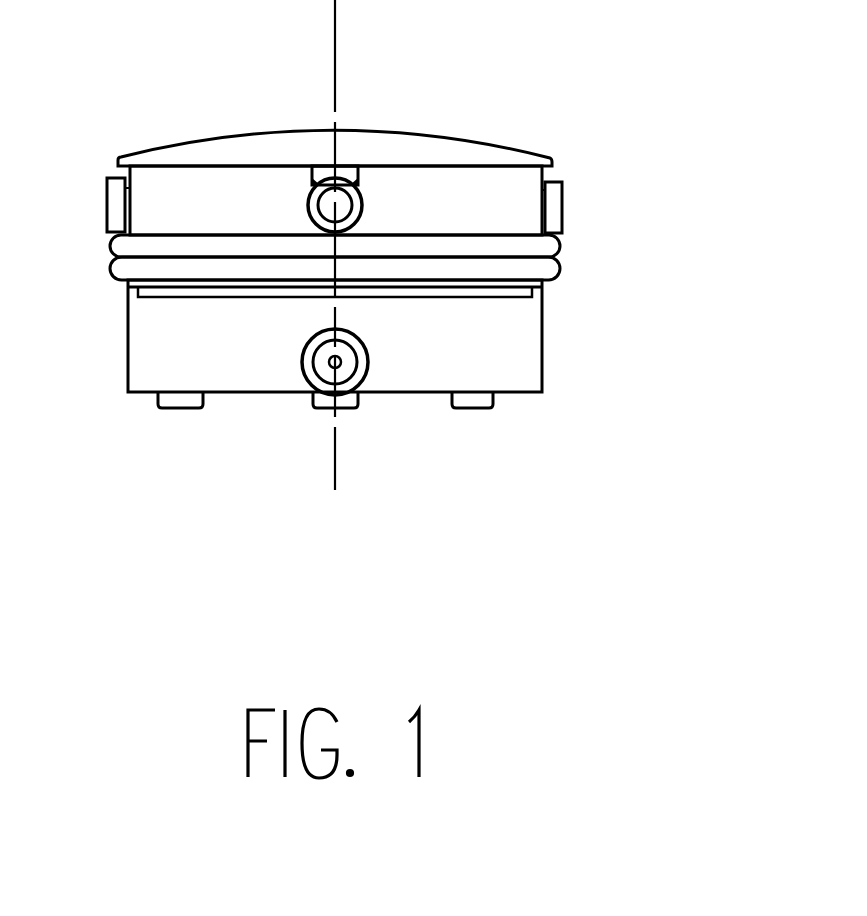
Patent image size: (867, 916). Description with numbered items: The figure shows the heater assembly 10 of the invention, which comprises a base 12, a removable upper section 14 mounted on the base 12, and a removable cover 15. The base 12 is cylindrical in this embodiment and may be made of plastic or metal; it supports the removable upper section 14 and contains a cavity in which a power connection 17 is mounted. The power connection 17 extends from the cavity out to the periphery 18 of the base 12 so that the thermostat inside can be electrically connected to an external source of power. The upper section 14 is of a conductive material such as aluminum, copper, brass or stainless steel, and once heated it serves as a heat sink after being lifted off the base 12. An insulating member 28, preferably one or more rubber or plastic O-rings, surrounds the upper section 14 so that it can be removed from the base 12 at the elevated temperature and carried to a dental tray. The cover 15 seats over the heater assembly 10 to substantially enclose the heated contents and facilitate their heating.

The heater assembly 10 is at (395, 286).
The base 12 is at (445, 369).
The removable upper section 14 is at (292, 125).
The removable cover 15 is at (490, 145).
The power connection 17 is at (442, 451).
The periphery 18 is at (258, 481).
The insulating member 28 is at (563, 276).